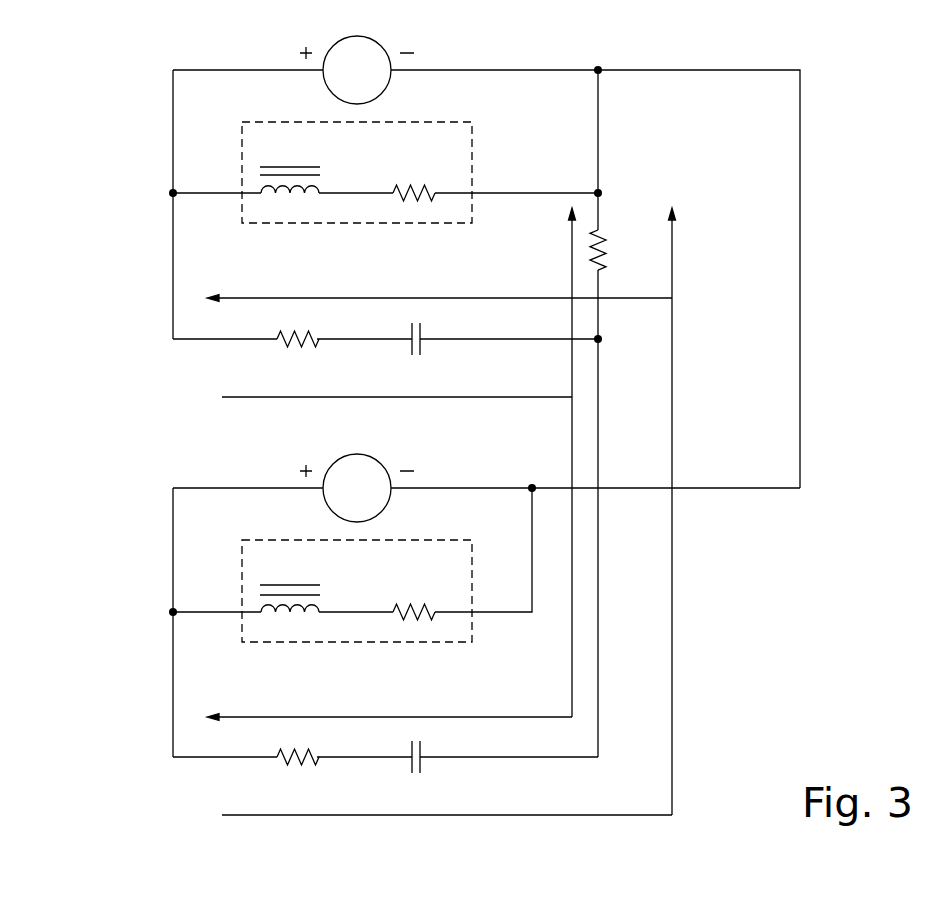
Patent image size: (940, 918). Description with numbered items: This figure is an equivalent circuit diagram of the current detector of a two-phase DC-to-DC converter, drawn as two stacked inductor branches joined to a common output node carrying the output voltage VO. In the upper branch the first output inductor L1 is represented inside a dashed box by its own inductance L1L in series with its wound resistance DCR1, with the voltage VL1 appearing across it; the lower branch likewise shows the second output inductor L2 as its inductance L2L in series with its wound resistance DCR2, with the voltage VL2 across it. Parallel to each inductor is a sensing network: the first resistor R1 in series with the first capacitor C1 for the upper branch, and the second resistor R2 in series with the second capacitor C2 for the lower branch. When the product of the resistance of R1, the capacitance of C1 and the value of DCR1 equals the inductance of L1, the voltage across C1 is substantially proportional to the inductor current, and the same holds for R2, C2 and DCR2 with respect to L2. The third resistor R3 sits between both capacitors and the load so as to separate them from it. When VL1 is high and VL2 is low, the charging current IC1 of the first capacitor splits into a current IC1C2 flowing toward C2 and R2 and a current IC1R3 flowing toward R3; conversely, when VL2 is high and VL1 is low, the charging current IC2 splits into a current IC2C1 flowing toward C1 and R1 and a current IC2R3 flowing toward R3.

The first output inductor L1 is at (354, 153).
The inductance of the first output inductor L1L is at (290, 164).
The wound resistance of the first output inductor DCR1 is at (415, 173).
The voltage across the first output inductor VL1 is at (357, 70).
The first resistor R1 is at (298, 358).
The first capacitor C1 is at (417, 357).
The third resistor R3 is at (620, 250).
The output voltage VO is at (798, 43).
The second output inductor L2 is at (354, 572).
The inductance of the second output inductor L2L is at (290, 583).
The wound resistance of the second output inductor DCR2 is at (415, 591).
The voltage across the second output inductor VL2 is at (357, 488).
The second resistor R2 is at (298, 776).
The second capacitor C2 is at (417, 775).
The current I_C1,R3 IC1R3 is at (536, 462).
The current I_C2,R3 IC2R3 is at (711, 511).
The current I_C2,C1 IC2C1 is at (439, 281).
The current I_C1 IC1 is at (397, 417).
The current I_C1,C2 IC1C2 is at (389, 699).
The current I_C2 IC2 is at (447, 837).